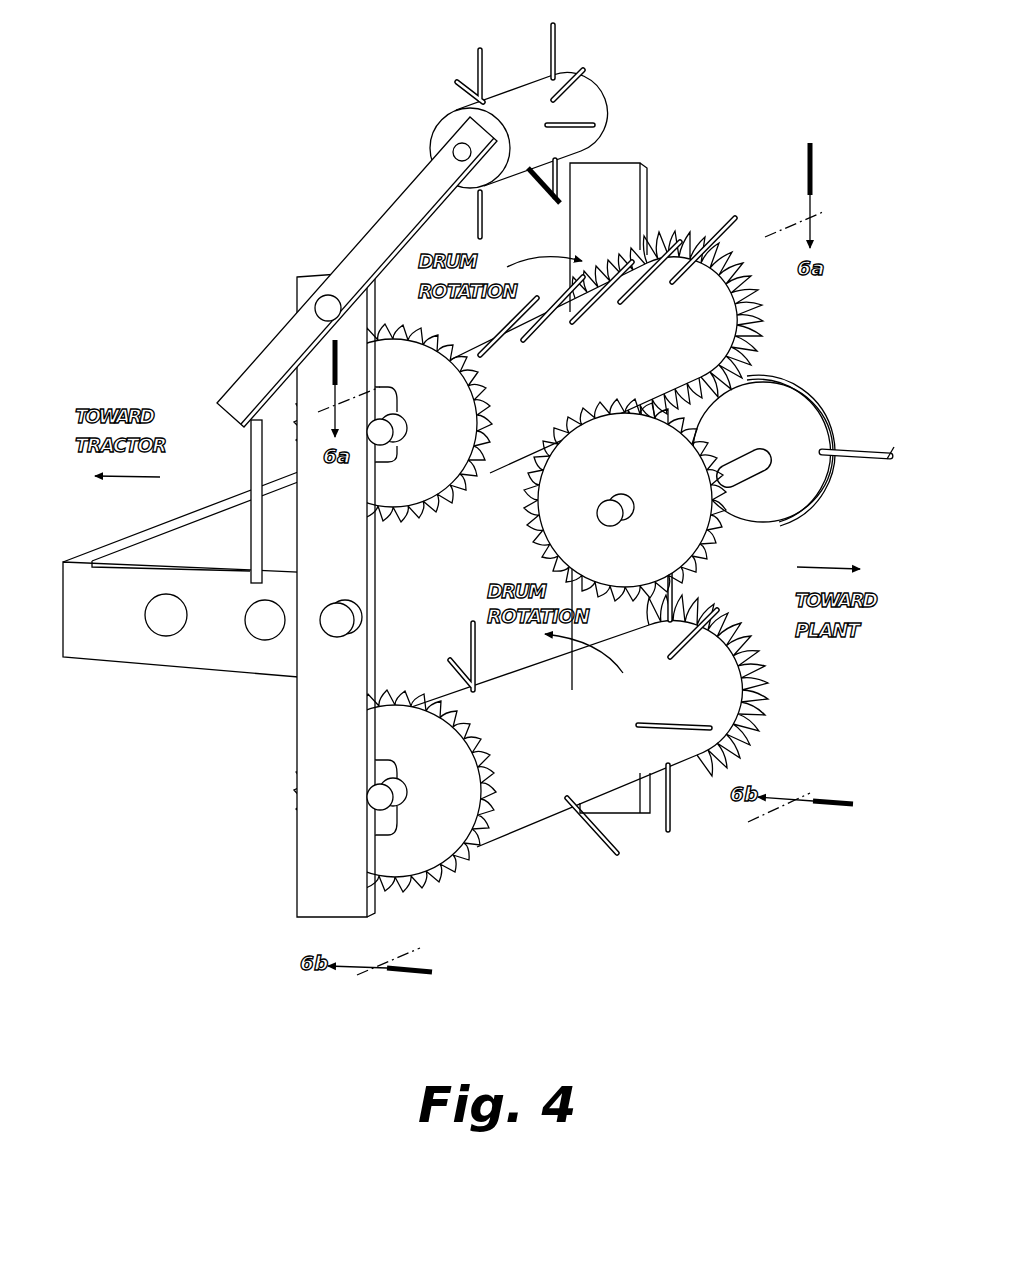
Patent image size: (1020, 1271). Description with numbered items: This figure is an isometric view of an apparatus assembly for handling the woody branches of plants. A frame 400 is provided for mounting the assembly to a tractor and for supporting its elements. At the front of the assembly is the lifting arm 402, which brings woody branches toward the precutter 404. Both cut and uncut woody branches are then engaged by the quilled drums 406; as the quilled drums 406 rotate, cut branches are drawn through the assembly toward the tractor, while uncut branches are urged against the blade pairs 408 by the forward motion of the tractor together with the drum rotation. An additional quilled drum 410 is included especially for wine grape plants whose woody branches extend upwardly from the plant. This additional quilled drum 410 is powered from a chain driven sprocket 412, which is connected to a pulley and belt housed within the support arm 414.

The frame 400 is at (217, 702).
The lifting arm 402 is at (812, 380).
The precutter 404 is at (790, 312).
The quilled drums 406 is at (615, 890).
The blade pairs 408 is at (435, 915).
The additional quilled drum 410 is at (580, 50).
The chain driven sprocket 412 is at (322, 270).
The support arm 414 is at (398, 195).